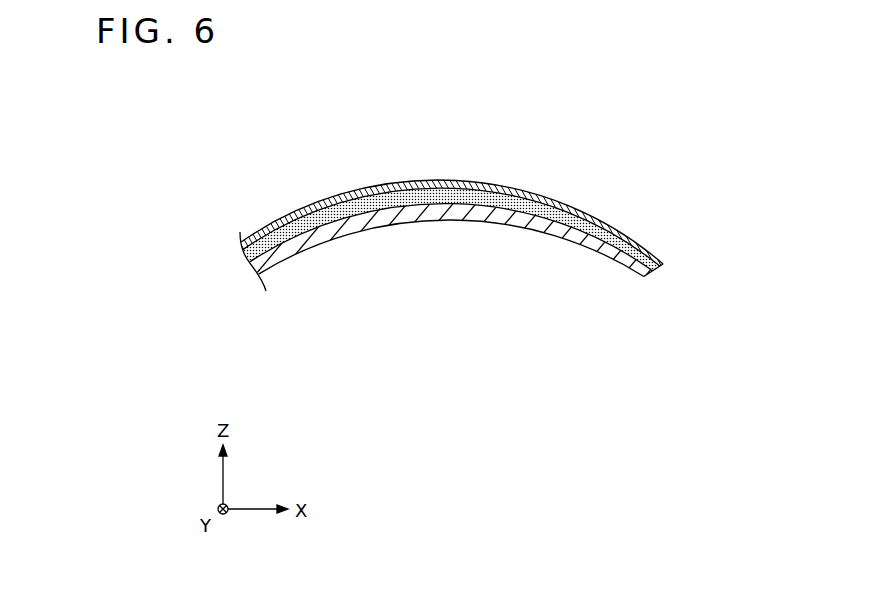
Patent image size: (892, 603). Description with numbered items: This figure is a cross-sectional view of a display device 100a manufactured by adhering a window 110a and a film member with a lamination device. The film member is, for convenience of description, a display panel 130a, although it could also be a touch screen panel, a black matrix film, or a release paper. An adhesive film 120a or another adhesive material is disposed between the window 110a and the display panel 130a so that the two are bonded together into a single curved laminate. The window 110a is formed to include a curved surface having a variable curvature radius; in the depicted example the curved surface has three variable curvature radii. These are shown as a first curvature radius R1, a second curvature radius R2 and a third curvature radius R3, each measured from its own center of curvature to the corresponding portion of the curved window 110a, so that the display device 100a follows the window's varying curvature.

The display device 100a is at (683, 144).
The window 110a is at (648, 283).
The adhesive film 120a is at (657, 258).
The display panel 130a is at (657, 255).
The first curvature radius R1 is at (418, 490).
The second curvature radius R2 is at (454, 446).
The third curvature radius R3 is at (482, 495).